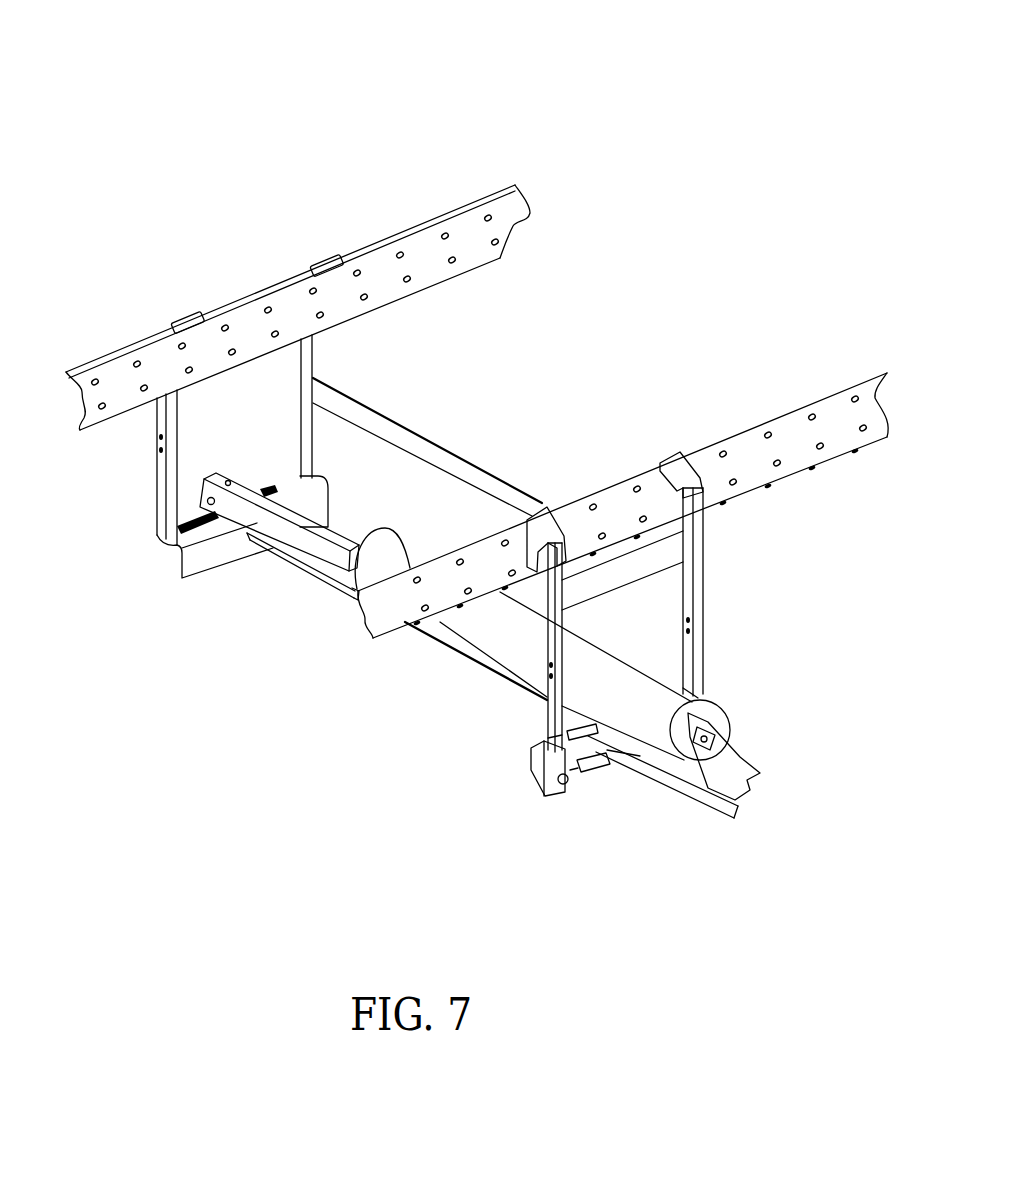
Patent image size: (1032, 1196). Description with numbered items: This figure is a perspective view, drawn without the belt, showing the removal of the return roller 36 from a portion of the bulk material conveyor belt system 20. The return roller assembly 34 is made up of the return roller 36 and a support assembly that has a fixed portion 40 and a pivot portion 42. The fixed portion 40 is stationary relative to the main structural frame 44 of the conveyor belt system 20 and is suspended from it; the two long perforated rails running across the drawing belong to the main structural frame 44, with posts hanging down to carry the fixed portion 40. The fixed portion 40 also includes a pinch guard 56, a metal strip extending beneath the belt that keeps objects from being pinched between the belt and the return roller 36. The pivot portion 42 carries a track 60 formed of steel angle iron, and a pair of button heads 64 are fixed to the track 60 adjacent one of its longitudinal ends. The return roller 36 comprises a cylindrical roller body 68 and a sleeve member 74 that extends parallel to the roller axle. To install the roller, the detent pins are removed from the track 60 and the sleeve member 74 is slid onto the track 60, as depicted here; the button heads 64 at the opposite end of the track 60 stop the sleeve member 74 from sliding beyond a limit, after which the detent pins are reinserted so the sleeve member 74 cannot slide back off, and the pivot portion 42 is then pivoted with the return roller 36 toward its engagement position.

The bulk material conveyor belt system 20 is at (521, 96).
The return roller assembly 34 is at (698, 560).
The return roller 36 is at (740, 762).
The fixed portion 40 is at (552, 710).
The pivot portion 42 is at (298, 552).
The main structural frame 44 is at (787, 425).
The pinch guard 56 is at (372, 424).
The track 60 is at (340, 573).
The button heads 64 is at (232, 478).
The roller body 68 is at (702, 688).
The sleeve member 74 is at (670, 762).